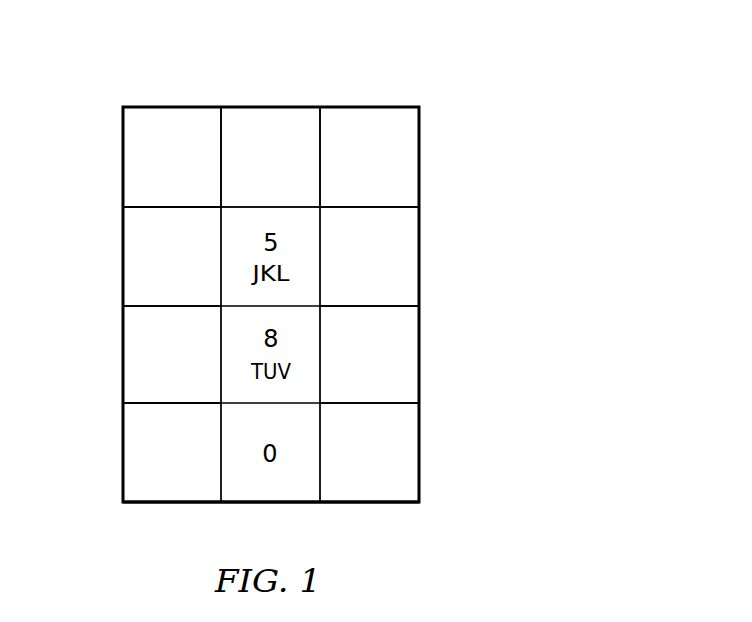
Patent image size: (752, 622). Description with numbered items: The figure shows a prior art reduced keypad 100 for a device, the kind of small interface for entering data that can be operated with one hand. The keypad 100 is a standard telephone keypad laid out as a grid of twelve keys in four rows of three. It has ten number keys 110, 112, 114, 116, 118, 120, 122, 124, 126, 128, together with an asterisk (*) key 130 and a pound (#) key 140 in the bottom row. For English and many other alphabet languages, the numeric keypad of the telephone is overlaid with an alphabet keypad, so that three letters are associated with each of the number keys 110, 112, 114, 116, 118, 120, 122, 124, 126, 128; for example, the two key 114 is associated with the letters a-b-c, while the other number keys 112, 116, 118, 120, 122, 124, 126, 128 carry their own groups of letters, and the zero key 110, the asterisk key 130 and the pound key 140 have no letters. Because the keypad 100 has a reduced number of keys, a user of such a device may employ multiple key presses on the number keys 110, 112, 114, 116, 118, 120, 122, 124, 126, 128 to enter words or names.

The reduced keypad 100 is at (378, 62).
The number key 110 is at (282, 503).
The number key 112 is at (127, 133).
The two (2) key 114 is at (283, 115).
The number key 116 is at (413, 153).
The number key 118 is at (413, 252).
The number key 120 is at (413, 362).
The number key 122 is at (127, 360).
The number key 124 is at (127, 252).
The number key 126 is at (228, 218).
The number key 128 is at (228, 393).
The asterisk (*) key 130 is at (127, 475).
The pound (#) key 140 is at (413, 460).